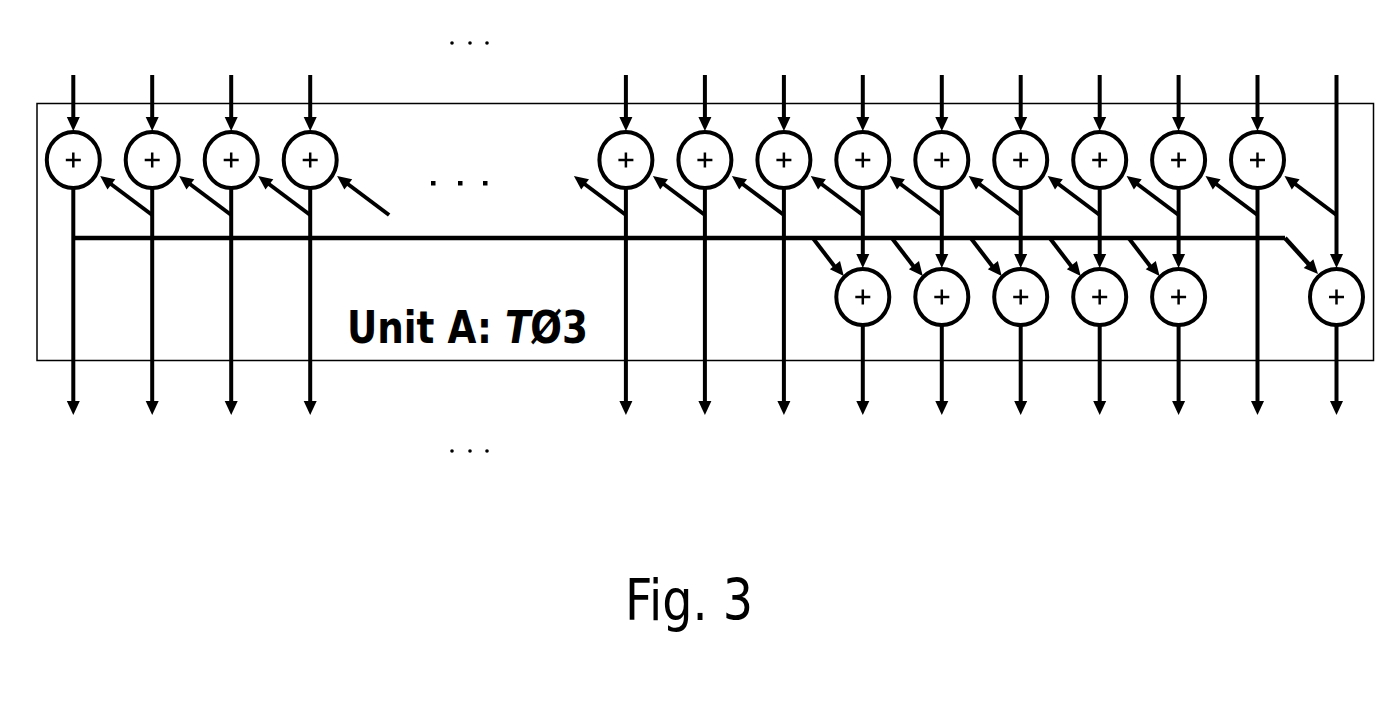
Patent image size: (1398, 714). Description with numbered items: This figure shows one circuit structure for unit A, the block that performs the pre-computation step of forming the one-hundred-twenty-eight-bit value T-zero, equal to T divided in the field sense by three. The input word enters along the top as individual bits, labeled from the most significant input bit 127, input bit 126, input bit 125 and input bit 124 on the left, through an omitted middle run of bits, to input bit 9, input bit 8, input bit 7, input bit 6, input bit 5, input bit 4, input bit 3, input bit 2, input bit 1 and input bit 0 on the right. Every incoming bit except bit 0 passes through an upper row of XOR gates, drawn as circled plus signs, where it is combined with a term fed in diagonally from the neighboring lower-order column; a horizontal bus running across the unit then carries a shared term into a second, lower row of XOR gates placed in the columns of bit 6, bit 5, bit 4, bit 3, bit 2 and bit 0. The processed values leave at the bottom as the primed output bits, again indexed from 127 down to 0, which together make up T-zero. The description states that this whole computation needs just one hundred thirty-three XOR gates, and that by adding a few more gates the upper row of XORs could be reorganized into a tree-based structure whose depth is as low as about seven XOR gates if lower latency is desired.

The adder stage for bit a127 (input a127, output a'127) 127 is at (84, 241).
The adder stage for bit a126 (input a126, output a'126) 126 is at (147, 241).
The adder stage for bit a125 (input a125, output a'125) 125 is at (226, 241).
The adder stage for bit a124 (input a124, output a'124) 124 is at (321, 241).
The adder stage for bit a9 (input a9, output a'9) 9 is at (612, 241).
The adder stage for bit a8 (input a8, output a'8) 8 is at (691, 241).
The adder stage for bit a7 (input a7, output a'7) 7 is at (770, 241).
The adder stage for bit a6 (input a6, output a'6) 6 is at (849, 241).
The adder stage for bit a5 (input a5, output a'5) 5 is at (928, 241).
The adder stage for bit a4 (input a4, output a'4) 4 is at (1007, 241).
The adder stage for bit a3 (input a3, output a'3) 3 is at (1086, 241).
The adder stage for bit a2 (input a2, output a'2) 2 is at (1165, 241).
The adder stage for bit a1 (input a1, output a'1) 1 is at (1244, 241).
The adder stage for bit a0 (input a0, output a'0) 0 is at (1323, 241).